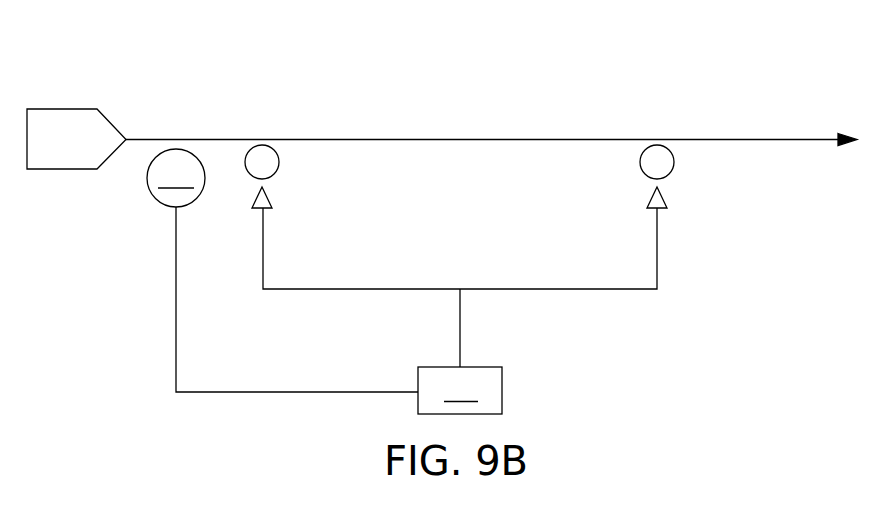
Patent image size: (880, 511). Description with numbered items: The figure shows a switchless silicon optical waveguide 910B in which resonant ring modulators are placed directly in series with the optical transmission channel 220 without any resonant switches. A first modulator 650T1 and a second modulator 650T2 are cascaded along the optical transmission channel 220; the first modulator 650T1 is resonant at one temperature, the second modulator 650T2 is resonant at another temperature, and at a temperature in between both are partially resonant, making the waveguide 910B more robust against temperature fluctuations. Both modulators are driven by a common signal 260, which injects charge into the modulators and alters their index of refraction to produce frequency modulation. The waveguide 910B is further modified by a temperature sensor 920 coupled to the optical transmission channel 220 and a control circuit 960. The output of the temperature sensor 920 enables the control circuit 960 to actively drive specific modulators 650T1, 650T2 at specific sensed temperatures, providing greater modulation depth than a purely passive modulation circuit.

The waveguide 910B is at (707, 46).
The optical transmission channel 220 is at (208, 138).
The temperature sensor 920 is at (282, 270).
The first modulator 650T1 is at (266, 157).
The second modulator 650T2 is at (651, 157).
The common signal 260 is at (350, 291).
The control circuit 960 is at (460, 390).